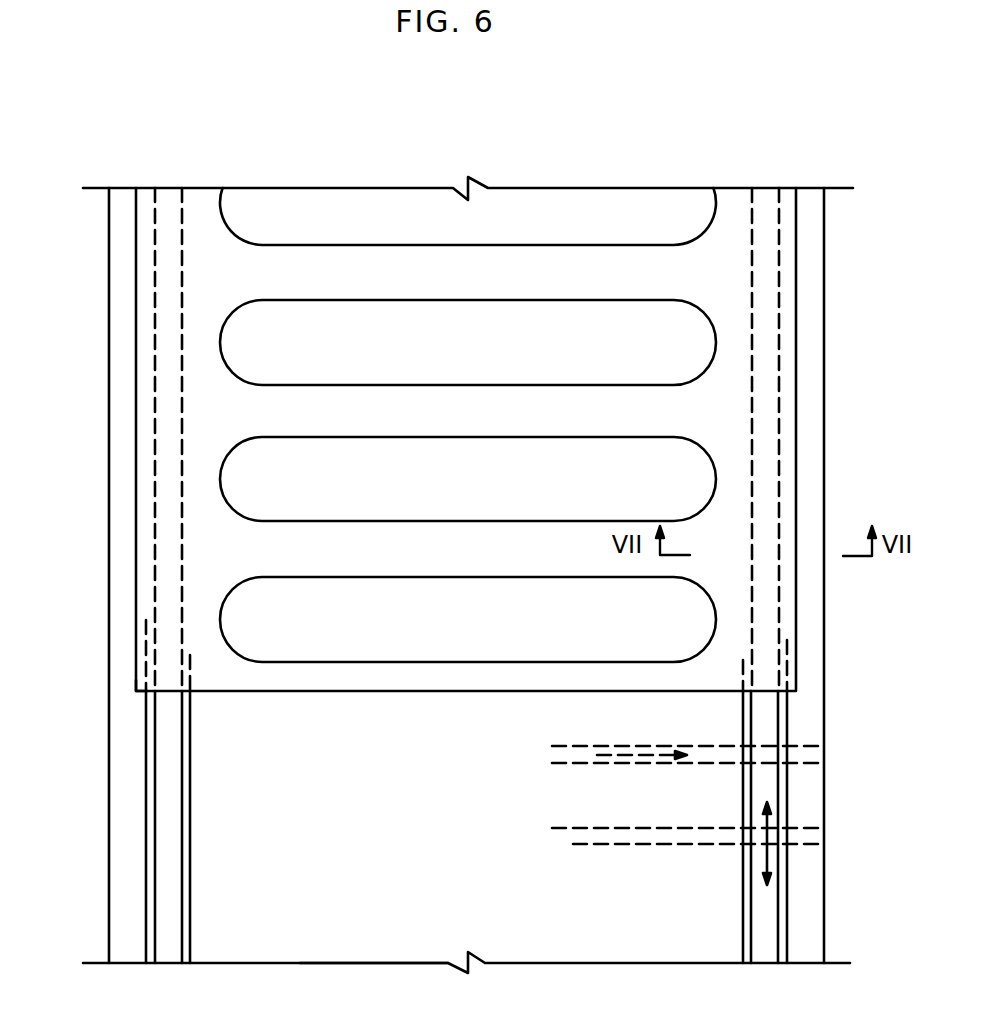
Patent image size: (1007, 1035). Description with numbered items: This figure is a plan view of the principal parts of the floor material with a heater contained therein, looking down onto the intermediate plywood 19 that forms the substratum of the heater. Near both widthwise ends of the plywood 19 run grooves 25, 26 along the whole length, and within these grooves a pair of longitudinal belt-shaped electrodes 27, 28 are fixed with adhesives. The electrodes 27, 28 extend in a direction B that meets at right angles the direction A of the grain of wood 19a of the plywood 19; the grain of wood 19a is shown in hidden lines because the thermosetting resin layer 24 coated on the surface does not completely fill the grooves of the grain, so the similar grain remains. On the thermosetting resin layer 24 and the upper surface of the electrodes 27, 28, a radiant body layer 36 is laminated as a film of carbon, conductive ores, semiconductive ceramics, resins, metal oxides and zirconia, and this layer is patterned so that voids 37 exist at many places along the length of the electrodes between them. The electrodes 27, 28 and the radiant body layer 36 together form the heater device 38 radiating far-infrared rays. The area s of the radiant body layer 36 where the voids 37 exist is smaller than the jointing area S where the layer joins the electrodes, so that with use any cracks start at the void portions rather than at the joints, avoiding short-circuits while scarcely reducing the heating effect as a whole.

The intermediate plywood 19 is at (260, 965).
The grain of wood 19a is at (573, 763).
The thermosetting resin layer 24 is at (375, 945).
The groove 25 is at (147, 930).
The groove 26 is at (745, 935).
The belt-shaped electrode 27 is at (172, 840).
The belt-shaped electrode 28 is at (772, 925).
The radiant body layer 36 is at (470, 685).
The voids 37 is at (398, 230).
The heater device 38 is at (136, 690).
The area where the voids exist s is at (524, 415).
The jointing area S is at (733, 420).
The direction of the grain of wood A is at (642, 746).
The direction of the electrodes B is at (765, 855).